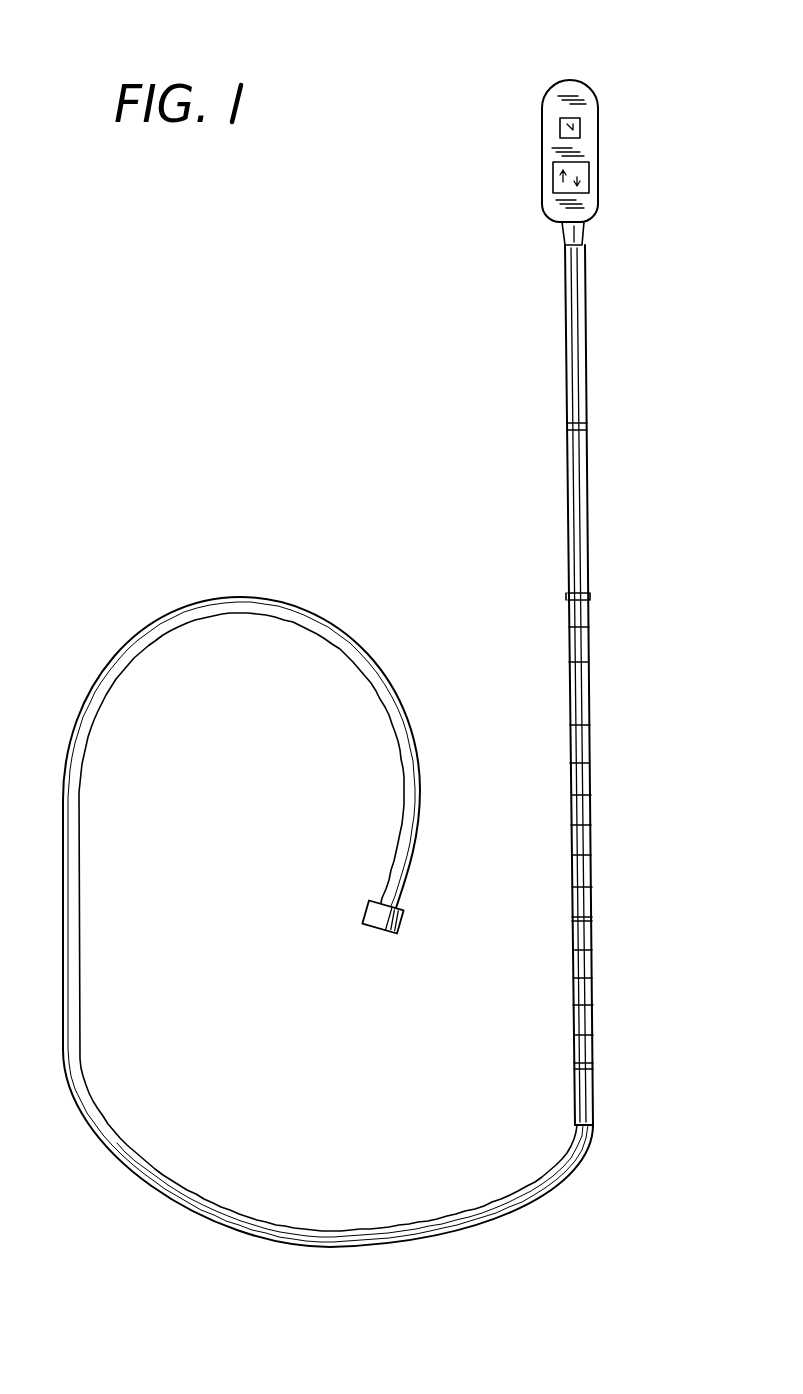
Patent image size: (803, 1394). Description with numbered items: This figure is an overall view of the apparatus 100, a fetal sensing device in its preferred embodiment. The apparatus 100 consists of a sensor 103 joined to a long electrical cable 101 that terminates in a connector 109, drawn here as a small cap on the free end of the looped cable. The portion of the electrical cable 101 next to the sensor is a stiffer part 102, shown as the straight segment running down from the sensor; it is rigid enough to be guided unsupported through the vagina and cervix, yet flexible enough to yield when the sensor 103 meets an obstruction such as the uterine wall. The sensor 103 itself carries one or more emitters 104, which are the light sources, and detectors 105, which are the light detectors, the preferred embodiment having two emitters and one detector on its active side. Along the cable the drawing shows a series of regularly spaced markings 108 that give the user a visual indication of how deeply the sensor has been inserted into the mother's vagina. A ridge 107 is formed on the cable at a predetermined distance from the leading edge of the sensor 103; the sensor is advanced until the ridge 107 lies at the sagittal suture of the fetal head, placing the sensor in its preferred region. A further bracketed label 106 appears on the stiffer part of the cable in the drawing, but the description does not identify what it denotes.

The apparatus 100 is at (572, 72).
The electrical cable 101 is at (251, 600).
The stiffer part 102 is at (579, 523).
The sensor 103 is at (598, 203).
The emitters 104 is at (580, 128).
The detectors 105 is at (589, 178).
The shaft section 106 is at (588, 427).
The ridge 107 is at (591, 597).
The regularly spaced markings 108 is at (589, 660).
The connector 109 is at (378, 932).